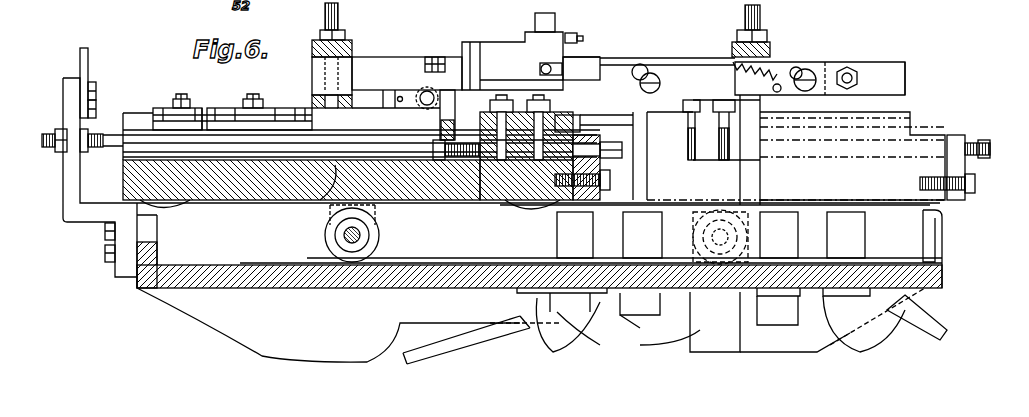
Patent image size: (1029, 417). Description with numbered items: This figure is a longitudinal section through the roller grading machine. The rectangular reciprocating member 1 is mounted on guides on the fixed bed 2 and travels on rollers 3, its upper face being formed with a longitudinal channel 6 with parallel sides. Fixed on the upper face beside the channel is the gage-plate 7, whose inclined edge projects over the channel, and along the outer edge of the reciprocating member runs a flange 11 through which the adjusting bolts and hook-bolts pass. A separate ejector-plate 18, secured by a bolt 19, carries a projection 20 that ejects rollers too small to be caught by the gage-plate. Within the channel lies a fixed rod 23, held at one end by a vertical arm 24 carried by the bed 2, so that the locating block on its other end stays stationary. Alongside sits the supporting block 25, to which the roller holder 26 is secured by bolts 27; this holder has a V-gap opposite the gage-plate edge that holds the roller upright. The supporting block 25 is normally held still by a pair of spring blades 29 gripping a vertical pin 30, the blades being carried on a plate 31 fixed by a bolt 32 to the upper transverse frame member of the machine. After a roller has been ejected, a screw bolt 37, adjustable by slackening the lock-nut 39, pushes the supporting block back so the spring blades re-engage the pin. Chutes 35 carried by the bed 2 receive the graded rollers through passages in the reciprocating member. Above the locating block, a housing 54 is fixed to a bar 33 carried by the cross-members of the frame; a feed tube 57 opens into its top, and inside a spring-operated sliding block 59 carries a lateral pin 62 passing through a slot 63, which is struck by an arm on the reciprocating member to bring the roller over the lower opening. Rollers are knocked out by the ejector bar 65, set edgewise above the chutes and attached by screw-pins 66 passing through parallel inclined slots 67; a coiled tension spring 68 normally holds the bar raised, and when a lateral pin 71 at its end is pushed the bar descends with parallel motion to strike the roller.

The reciprocating member 1 is at (265, 197).
The bed 2 is at (256, 265).
The rollers 3 is at (162, 210).
The channel 6 is at (320, 200).
The gage-plate 7 is at (238, 108).
The flange 11 is at (130, 116).
The ejector-plate 18 is at (192, 110).
The bolt 19 is at (183, 98).
The projection 20 is at (158, 108).
The rod 23 is at (140, 142).
The vertical arm 24 is at (73, 180).
The supporting block 25 is at (482, 200).
The roller holder 26 is at (583, 115).
The bolts 27 is at (512, 200).
The spring blades 29 is at (395, 92).
The vertical pin 30 is at (447, 72).
The plate 31 is at (312, 100).
The bolt 32 is at (325, 70).
The bar 33 is at (386, 58).
The chutes 35 is at (705, 322).
The screw bolt 37 is at (625, 160).
The lock-nut 39 is at (605, 163).
The housing 54 is at (490, 43).
The feed tube 57 is at (555, 22).
The sliding block 59 is at (590, 63).
The pin 62 is at (540, 69).
The slot 63 is at (555, 66).
The ejector bar 65 is at (898, 88).
The screw-pins 66 is at (850, 75).
The inclined slots 67 is at (800, 73).
The coiled tension spring 68 is at (758, 73).
The lateral pin 71 is at (860, 78).